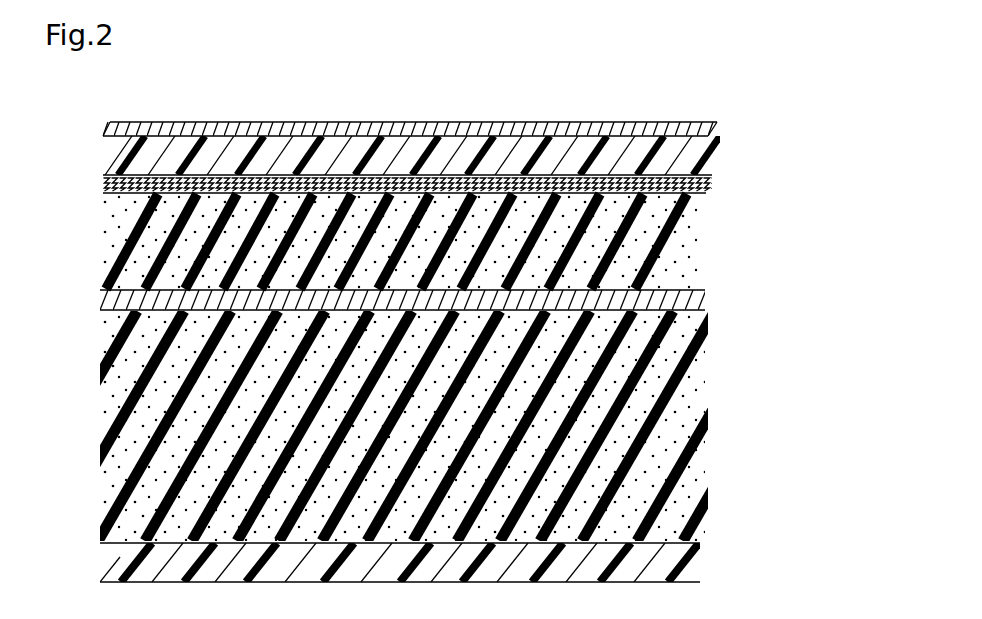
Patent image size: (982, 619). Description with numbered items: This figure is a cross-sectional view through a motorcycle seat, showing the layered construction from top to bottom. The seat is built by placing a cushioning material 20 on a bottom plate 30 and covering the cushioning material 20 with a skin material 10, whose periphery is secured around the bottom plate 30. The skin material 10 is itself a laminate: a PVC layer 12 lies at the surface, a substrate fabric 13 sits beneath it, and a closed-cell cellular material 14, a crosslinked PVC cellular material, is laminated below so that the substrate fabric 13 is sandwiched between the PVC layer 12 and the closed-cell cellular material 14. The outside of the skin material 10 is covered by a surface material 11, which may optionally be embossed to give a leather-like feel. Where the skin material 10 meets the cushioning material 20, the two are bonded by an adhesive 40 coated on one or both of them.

The skin material 10 is at (812, 115).
The surface material 11 is at (707, 130).
The PVC layer 12 is at (697, 163).
The substrate fabric 13 is at (703, 183).
The closed-cell cellular material 14 is at (680, 242).
The cushioning material 20 is at (668, 385).
The bottom plate 30 is at (693, 565).
The adhesive 40 is at (700, 303).